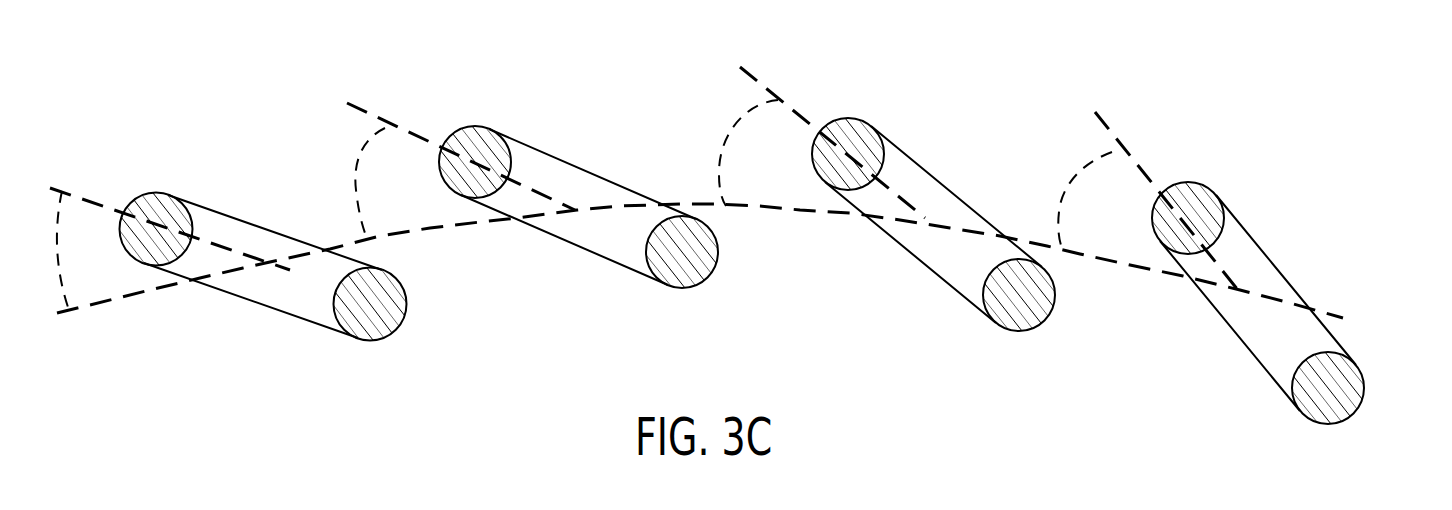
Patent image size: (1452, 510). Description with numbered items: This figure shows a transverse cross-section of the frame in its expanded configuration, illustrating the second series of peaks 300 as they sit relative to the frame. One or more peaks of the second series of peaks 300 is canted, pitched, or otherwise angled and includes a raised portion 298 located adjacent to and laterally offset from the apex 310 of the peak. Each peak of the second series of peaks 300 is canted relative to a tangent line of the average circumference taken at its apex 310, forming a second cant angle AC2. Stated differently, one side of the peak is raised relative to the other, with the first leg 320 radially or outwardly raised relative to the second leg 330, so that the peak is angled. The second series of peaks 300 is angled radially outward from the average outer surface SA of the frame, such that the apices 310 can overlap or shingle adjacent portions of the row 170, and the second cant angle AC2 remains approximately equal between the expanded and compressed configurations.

The raised portion 298 is at (532, 172).
The apex 310 is at (603, 193).
The first leg 320 is at (513, 200).
The second leg 330 is at (602, 238).
The second series of peaks 300 is at (1255, 145).
The row 170 is at (1342, 210).
The second cant angle AC2 is at (356, 181).
The average outer surface SA is at (133, 300).